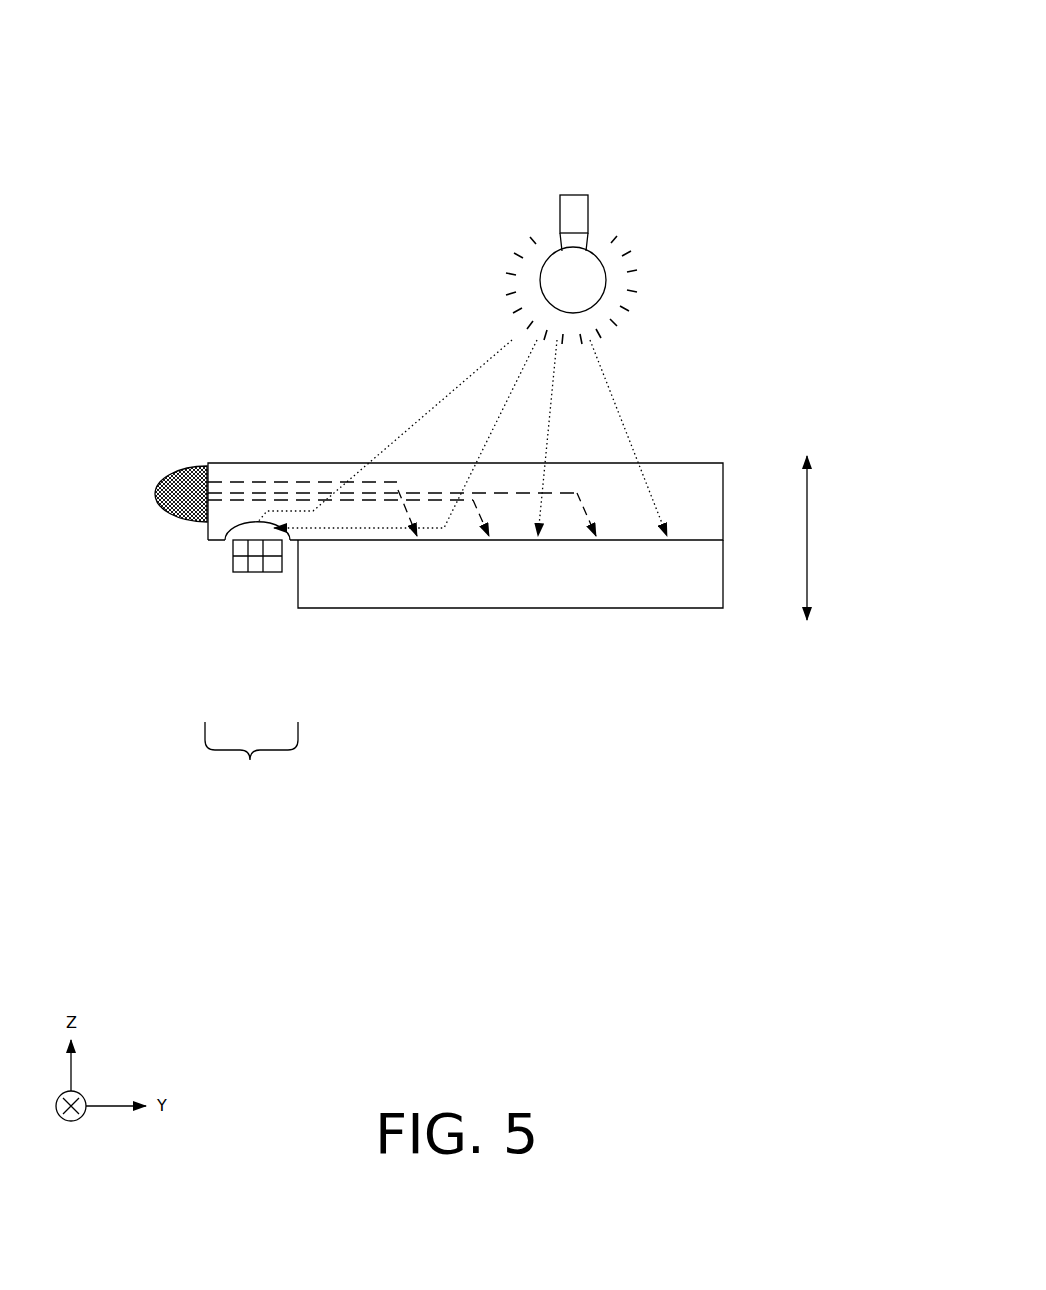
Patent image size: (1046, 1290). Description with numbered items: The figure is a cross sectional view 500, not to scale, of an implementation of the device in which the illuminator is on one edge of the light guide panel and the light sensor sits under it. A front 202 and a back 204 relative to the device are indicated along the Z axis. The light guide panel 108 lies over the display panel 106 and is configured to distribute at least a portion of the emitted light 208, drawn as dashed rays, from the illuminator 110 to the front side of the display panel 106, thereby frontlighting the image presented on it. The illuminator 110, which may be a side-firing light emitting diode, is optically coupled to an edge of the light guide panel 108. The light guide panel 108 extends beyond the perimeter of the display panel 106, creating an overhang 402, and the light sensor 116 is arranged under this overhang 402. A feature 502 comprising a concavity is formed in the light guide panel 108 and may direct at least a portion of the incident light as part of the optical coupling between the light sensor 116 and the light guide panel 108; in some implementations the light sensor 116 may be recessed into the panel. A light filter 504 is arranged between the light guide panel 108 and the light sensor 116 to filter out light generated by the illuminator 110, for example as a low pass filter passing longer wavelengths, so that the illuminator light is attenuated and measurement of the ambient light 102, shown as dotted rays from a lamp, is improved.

The cross sectional view 500 is at (743, 64).
The light guide panel 108 is at (253, 473).
The display panel 106 is at (362, 585).
The feature 502 is at (246, 517).
The illuminator 110 is at (193, 505).
The light filter 504 is at (241, 559).
The light sensor 116 is at (258, 573).
The overhang 402 is at (250, 768).
The emitted light 208 is at (283, 483).
The ambient light 102 is at (600, 362).
The front 202 is at (806, 471).
The back 204 is at (807, 603).